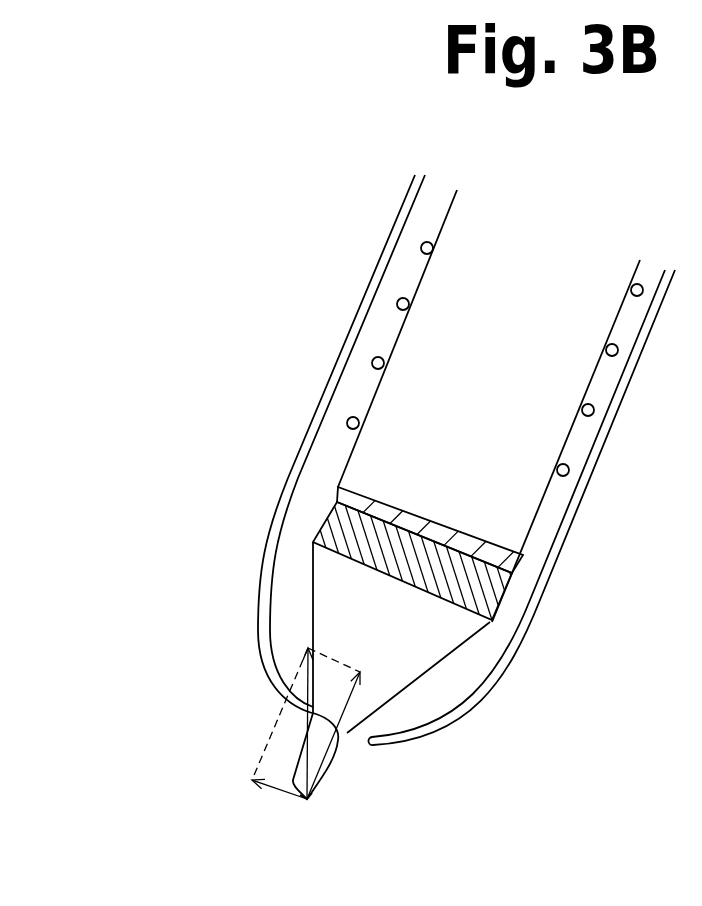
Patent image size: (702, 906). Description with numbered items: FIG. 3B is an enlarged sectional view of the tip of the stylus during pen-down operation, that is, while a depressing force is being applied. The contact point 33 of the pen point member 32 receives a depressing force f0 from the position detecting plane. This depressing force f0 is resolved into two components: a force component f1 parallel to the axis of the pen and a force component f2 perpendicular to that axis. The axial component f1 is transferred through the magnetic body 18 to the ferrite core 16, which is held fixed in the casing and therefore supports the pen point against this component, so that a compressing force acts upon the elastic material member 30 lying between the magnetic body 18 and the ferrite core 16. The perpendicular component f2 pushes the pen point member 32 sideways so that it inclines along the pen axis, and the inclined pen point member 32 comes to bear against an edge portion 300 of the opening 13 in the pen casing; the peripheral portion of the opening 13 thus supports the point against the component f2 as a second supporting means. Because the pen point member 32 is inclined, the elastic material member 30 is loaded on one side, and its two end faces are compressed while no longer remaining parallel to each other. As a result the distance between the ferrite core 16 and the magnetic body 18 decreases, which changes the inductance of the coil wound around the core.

The opening 13 is at (358, 737).
The ferrite core 16 is at (537, 432).
The magnetic body 18 is at (500, 605).
The elastic material member 30 is at (498, 558).
The pen point member 32 is at (433, 648).
The contact point 33 is at (307, 800).
The edge portion 300 is at (347, 745).
The depressing force f0 is at (306, 708).
The force component parallel to the axis f1 is at (345, 721).
The force component perpendicular to the axis f2 is at (266, 776).